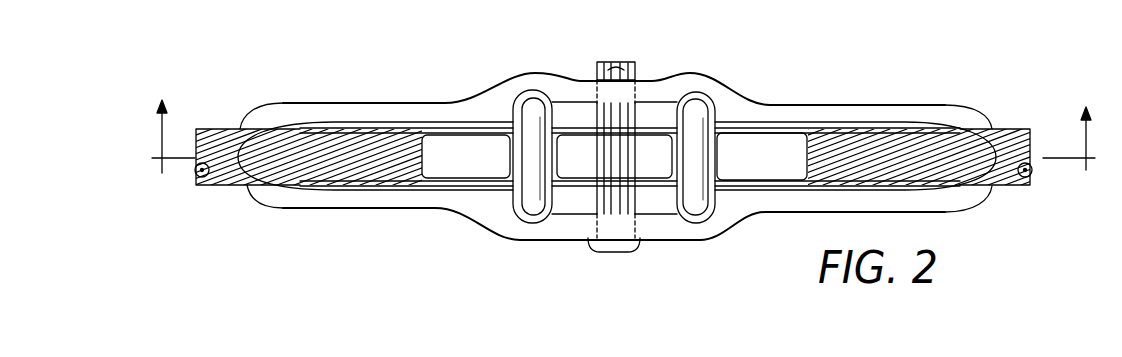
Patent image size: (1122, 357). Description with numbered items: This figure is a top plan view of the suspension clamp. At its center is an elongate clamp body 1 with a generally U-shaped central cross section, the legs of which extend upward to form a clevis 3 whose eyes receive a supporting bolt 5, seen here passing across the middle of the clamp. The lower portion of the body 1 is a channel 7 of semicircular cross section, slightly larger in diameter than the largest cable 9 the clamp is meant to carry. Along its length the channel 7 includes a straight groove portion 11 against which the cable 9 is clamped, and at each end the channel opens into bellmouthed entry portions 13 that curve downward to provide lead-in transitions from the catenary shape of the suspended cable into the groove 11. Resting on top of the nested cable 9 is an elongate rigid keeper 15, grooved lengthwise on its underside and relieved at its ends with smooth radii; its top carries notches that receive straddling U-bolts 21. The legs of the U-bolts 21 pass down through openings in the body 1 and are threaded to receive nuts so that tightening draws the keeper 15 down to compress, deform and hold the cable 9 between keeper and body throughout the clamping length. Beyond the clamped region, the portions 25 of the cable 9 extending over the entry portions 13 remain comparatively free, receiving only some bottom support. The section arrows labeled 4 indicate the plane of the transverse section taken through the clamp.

The clamp body 1 is at (742, 87).
The clevis 3 is at (568, 223).
The section line 4- 4 is at (622, 124).
The supporting bolt 5 is at (613, 196).
The channel 7 is at (358, 129).
The cable 9 is at (970, 190).
The straight groove portion 11 is at (458, 128).
The bellmouthed entry portions 13 is at (283, 208).
The keeper 15 is at (484, 167).
The U-bolts 21 is at (534, 203).
The cable portions 25 is at (398, 163).